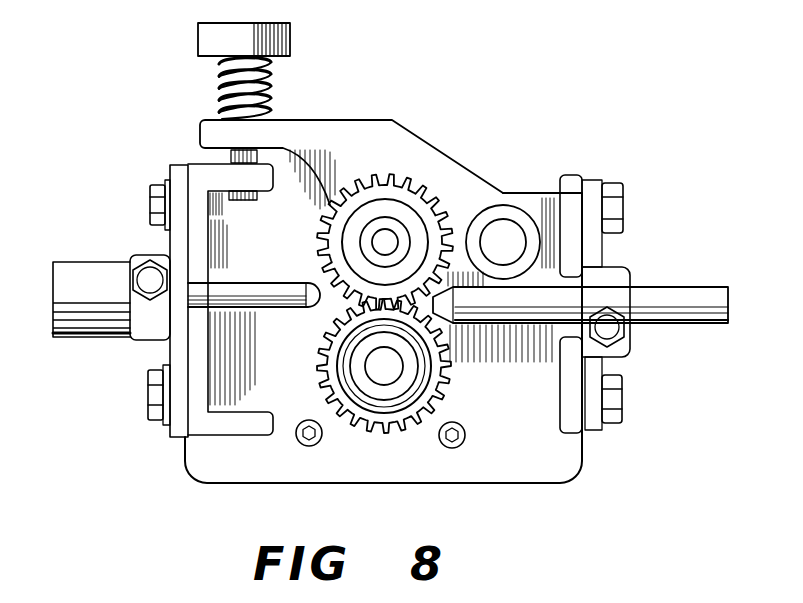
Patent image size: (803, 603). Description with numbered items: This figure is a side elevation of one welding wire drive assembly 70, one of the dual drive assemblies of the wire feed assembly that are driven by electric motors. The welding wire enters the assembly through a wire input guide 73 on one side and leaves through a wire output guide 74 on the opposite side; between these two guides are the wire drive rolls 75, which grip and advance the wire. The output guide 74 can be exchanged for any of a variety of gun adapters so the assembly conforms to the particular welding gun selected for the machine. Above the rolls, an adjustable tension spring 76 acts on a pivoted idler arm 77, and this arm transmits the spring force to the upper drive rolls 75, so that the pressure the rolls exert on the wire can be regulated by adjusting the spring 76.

The welding wire drive assembly 70 is at (480, 168).
The wire input guide 73 is at (653, 307).
The wire output guide 74 is at (240, 293).
The wire drive rolls 75 is at (425, 188).
The adjustable tension spring 76 is at (270, 97).
The pivoted idler arm 77 is at (398, 137).